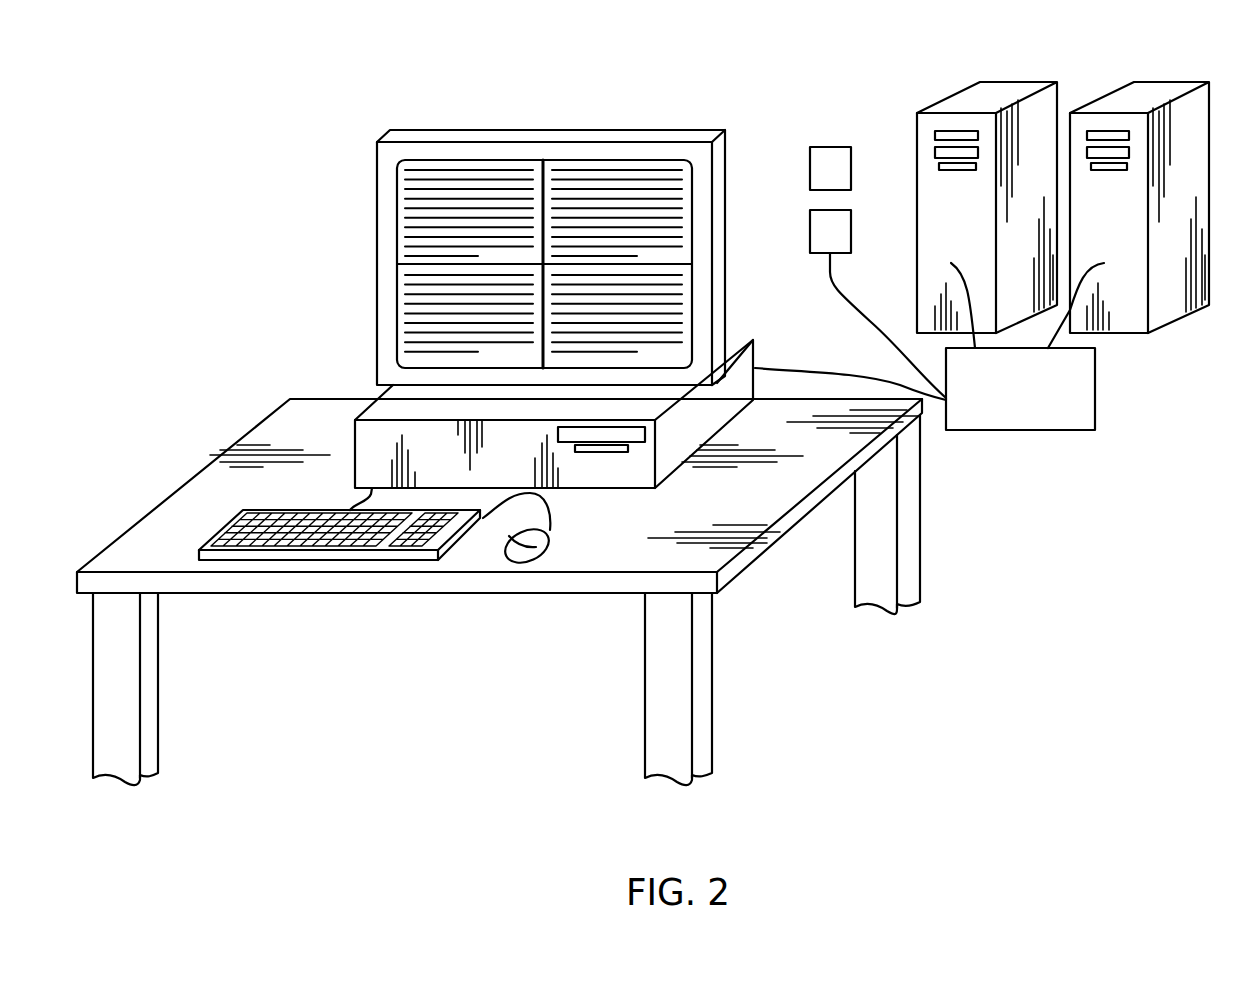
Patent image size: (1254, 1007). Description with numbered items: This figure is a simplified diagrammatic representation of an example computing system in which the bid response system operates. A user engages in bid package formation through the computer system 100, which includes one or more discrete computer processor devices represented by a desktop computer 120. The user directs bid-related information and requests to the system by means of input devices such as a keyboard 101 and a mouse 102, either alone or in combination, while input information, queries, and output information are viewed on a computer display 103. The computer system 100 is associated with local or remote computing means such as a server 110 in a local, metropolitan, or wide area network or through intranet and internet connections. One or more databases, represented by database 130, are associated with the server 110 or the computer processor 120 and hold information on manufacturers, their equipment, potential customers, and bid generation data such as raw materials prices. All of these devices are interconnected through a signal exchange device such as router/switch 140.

The computer system 100 is at (392, 45).
The keyboard 101 is at (230, 521).
The mouse 102 is at (500, 568).
The computer display 103 is at (563, 160).
The server 110 is at (1134, 91).
The desktop computer 120 is at (373, 410).
The database 130 is at (830, 147).
The router/switch 140 is at (1095, 360).